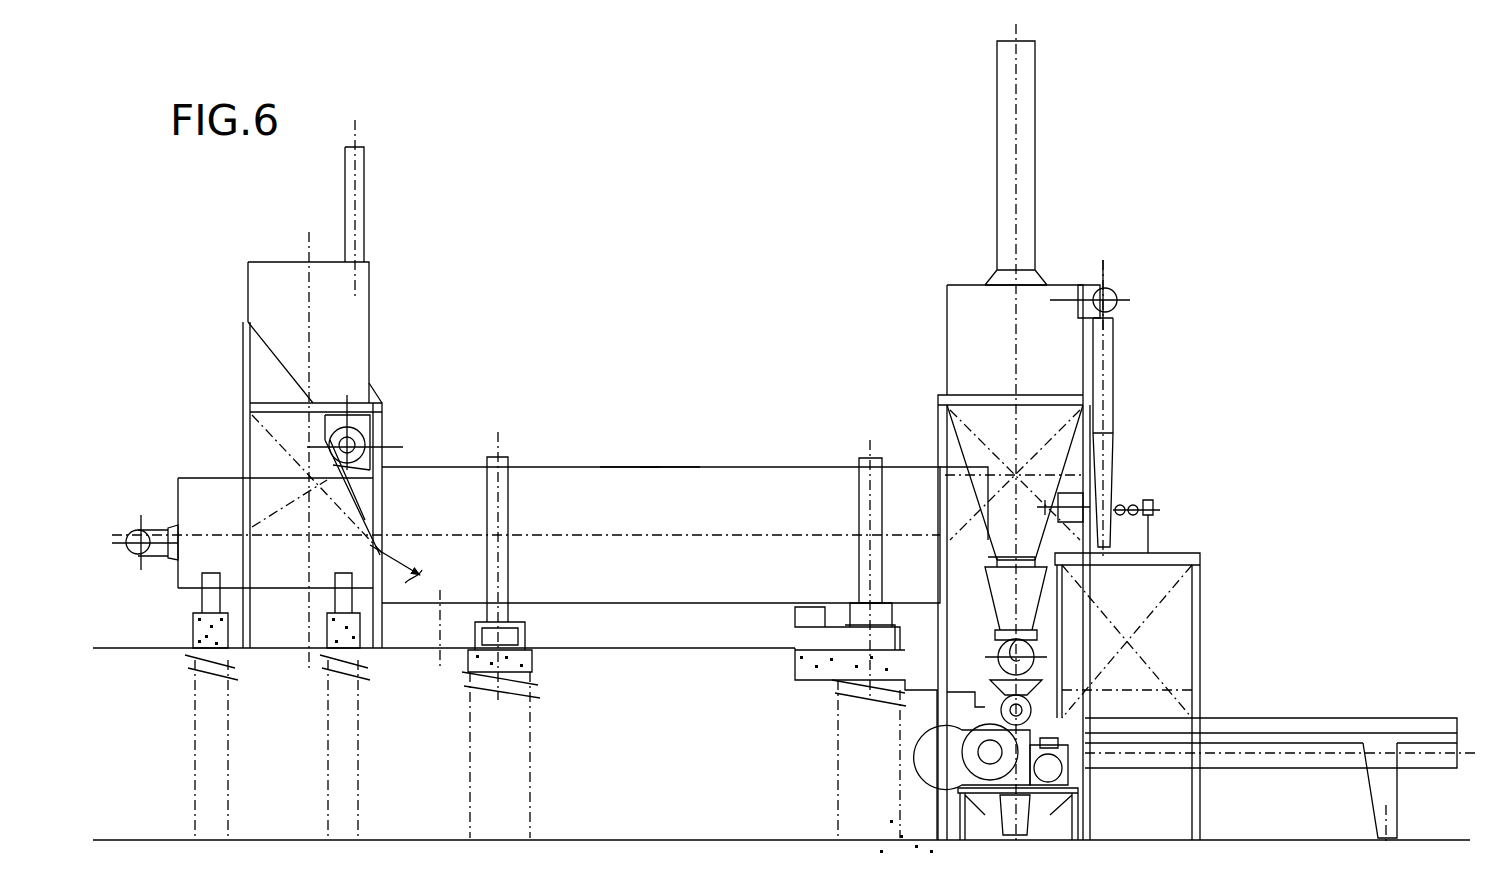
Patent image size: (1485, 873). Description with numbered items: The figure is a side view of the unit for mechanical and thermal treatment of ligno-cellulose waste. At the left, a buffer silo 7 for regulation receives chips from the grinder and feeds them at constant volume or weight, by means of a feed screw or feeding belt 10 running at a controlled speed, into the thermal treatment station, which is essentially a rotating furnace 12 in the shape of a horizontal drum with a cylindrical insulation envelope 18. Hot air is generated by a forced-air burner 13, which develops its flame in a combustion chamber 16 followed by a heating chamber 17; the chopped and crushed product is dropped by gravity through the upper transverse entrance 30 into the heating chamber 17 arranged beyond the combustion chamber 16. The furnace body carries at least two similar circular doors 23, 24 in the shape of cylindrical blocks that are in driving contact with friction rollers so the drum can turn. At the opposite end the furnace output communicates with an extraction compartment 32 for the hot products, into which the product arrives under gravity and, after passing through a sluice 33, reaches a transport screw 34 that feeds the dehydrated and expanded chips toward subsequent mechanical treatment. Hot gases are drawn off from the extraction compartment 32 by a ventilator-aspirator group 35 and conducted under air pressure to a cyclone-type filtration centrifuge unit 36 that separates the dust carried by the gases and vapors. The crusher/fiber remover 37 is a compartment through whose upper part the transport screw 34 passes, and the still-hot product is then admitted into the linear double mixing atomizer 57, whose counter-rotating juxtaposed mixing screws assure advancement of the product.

The buffer silo 7 is at (342, 337).
The feeding belt 10 is at (400, 410).
The rotating furnace 12 is at (655, 420).
The forced-air burner 13 is at (136, 524).
The combustion chamber 16 is at (208, 492).
The heating chamber 17 is at (440, 490).
The cylindrical insulation envelope 18 is at (605, 464).
The circular door 23 is at (497, 470).
The circular door 24 is at (868, 470).
The upper transverse entrance 30 is at (358, 547).
The extraction compartment 32 is at (1150, 538).
The sluice 33 is at (1030, 580).
The transport screw 34 is at (985, 713).
The ventilator-aspirator group 35 is at (1100, 480).
The cyclone-type filtration centrifuge unit 36 is at (983, 415).
The crusher/fiber remover 37 is at (953, 775).
The linear double mixing atomizer 57 is at (1292, 716).